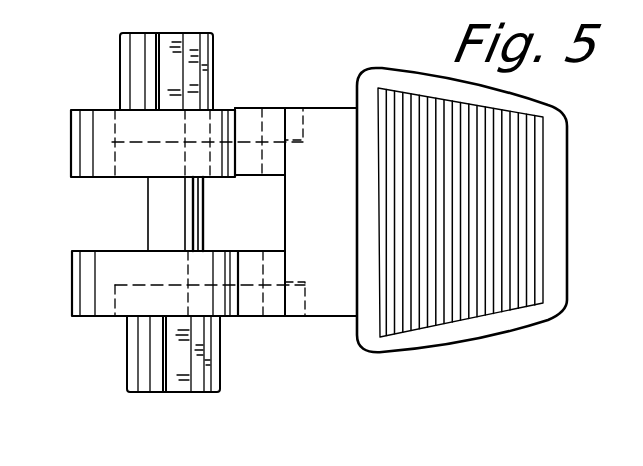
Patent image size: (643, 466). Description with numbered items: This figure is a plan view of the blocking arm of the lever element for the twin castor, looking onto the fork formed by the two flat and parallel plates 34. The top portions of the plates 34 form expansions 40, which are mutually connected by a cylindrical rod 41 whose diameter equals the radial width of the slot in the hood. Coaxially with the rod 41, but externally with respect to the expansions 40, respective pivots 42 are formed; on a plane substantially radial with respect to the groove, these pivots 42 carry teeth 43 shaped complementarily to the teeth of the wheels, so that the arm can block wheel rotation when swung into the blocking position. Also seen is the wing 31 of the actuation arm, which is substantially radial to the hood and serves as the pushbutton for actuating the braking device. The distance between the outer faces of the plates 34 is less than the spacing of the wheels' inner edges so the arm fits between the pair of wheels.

The wing 31 is at (490, 318).
The flat and parallel plates 34 is at (255, 132).
The expansions 40 is at (195, 157).
The cylindrical rod 41 is at (160, 212).
The pivots 42 is at (120, 48).
The teeth 43 is at (216, 55).